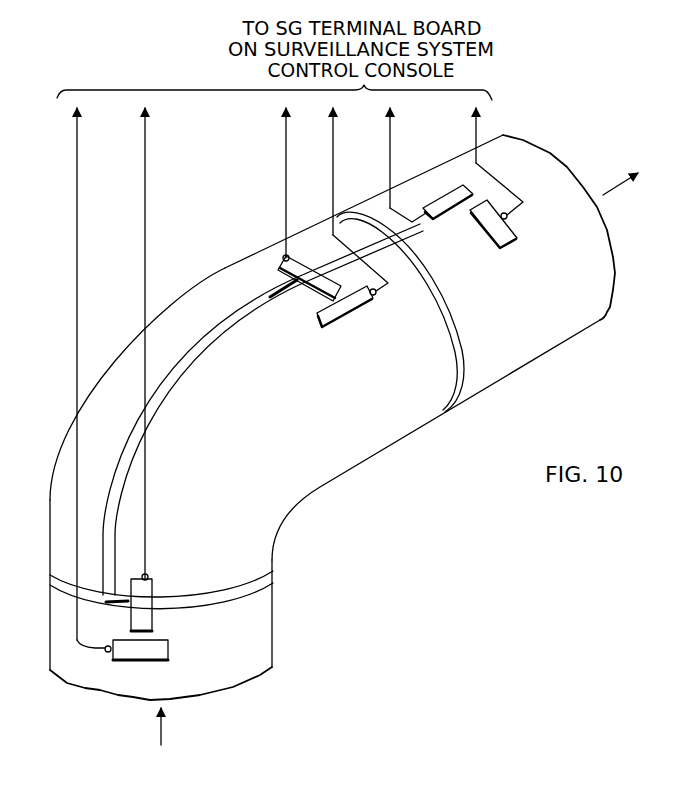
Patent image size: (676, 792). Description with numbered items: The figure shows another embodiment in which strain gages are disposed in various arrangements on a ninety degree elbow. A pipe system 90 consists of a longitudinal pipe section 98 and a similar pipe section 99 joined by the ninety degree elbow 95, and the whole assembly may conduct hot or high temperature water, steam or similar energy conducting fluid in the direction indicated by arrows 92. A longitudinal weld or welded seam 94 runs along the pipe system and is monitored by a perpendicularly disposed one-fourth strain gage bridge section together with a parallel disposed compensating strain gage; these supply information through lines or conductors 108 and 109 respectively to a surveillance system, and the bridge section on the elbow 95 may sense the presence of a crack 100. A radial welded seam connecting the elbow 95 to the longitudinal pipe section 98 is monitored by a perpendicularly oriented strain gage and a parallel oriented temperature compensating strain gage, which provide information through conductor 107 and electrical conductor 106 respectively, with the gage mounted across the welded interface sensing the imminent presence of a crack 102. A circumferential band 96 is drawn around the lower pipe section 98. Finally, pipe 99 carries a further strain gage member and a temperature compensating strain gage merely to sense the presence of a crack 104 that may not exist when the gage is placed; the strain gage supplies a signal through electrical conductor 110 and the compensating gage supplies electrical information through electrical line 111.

The pipe system 90 is at (390, 556).
The arrows 92 is at (625, 185).
The longitudinal weld 94 is at (243, 313).
The elbow 95 is at (370, 454).
The circumferential band 96 is at (274, 571).
The pipe section 98 is at (273, 626).
The pipe section 99 is at (537, 358).
The crack 100 is at (289, 292).
The crack 102 is at (127, 607).
The crack 104 is at (467, 221).
The electrical conductor 106 is at (77, 135).
The conductor 107 is at (145, 135).
The conductor 108 is at (286, 136).
The conductor 109 is at (333, 143).
The electrical conductor 110 is at (390, 143).
The electrical line 111 is at (477, 112).